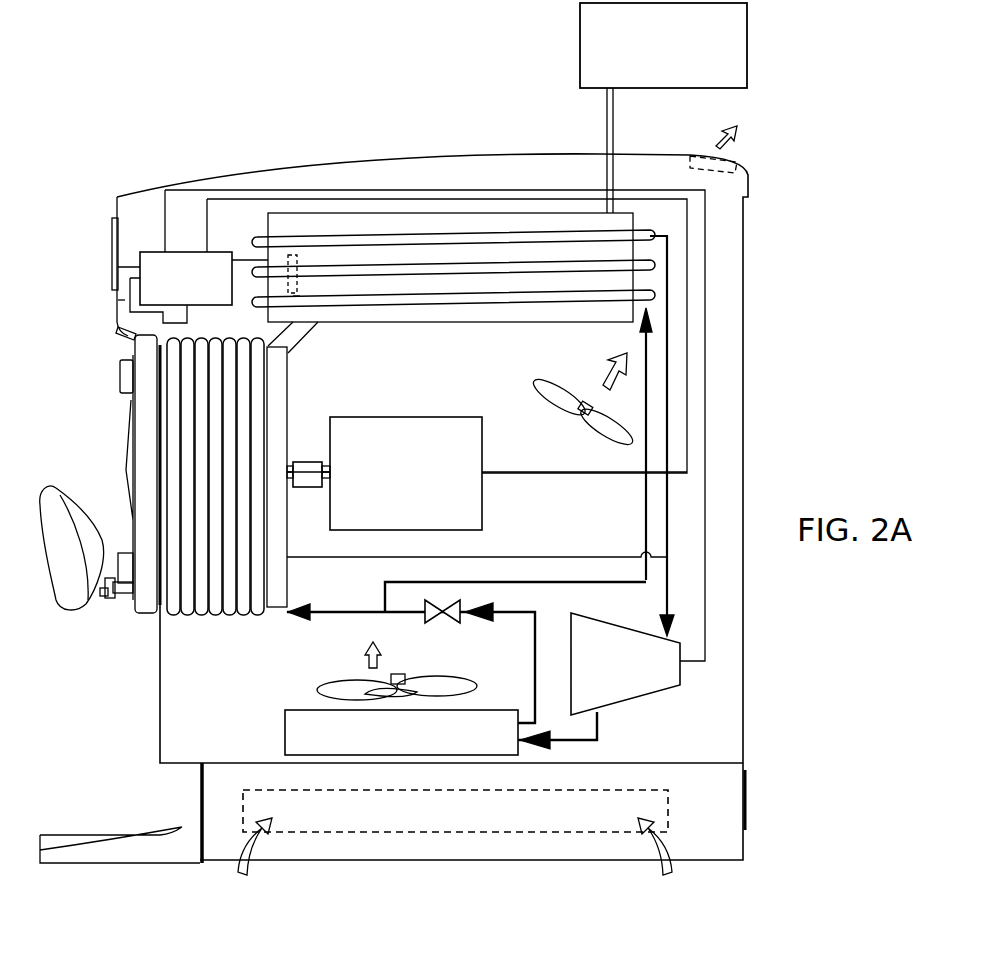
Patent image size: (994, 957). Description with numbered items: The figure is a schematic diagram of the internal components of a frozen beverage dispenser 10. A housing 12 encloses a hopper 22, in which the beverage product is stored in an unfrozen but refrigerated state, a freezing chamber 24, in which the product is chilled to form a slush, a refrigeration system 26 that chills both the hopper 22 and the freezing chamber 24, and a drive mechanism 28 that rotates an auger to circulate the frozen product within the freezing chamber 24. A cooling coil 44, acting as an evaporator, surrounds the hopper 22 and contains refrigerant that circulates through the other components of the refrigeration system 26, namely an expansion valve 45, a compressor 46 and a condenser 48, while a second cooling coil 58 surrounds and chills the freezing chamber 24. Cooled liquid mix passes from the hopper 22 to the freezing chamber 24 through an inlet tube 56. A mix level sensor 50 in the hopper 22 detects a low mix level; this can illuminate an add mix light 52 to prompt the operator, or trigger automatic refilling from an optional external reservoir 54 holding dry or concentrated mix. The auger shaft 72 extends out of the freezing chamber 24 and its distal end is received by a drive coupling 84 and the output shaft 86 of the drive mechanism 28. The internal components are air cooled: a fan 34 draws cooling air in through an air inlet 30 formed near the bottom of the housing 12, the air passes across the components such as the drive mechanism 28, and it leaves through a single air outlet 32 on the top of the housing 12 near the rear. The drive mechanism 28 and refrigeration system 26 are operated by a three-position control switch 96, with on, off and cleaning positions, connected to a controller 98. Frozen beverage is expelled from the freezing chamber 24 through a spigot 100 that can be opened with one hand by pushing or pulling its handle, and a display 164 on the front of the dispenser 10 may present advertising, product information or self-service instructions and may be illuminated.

The frozen beverage dispenser 10 is at (133, 46).
The housing 12 is at (407, 130).
The hopper 22 is at (556, 323).
The freezing chamber 24 is at (287, 567).
The refrigeration system 26 is at (650, 737).
The drive mechanism 28 is at (403, 389).
The air inlet 30 is at (306, 833).
The air outlet 32 is at (699, 155).
The fan 34 is at (545, 392).
The cooling coil 44 is at (492, 305).
The expansion valve 45 is at (437, 622).
The compressor 46 is at (655, 690).
The condenser 48 is at (285, 735).
The mix level sensor 50 is at (300, 262).
The add mix light 52 is at (117, 298).
The external reservoir 54 is at (580, 45).
The inlet tube 56 is at (310, 330).
The cooling coil 58 is at (227, 614).
The shaft 72 is at (291, 462).
The drive coupling 84 is at (305, 488).
The output shaft 86 is at (322, 462).
The control switch 96 is at (120, 338).
The controller 98 is at (152, 252).
The spigot 100 is at (112, 600).
The display 164 is at (112, 243).